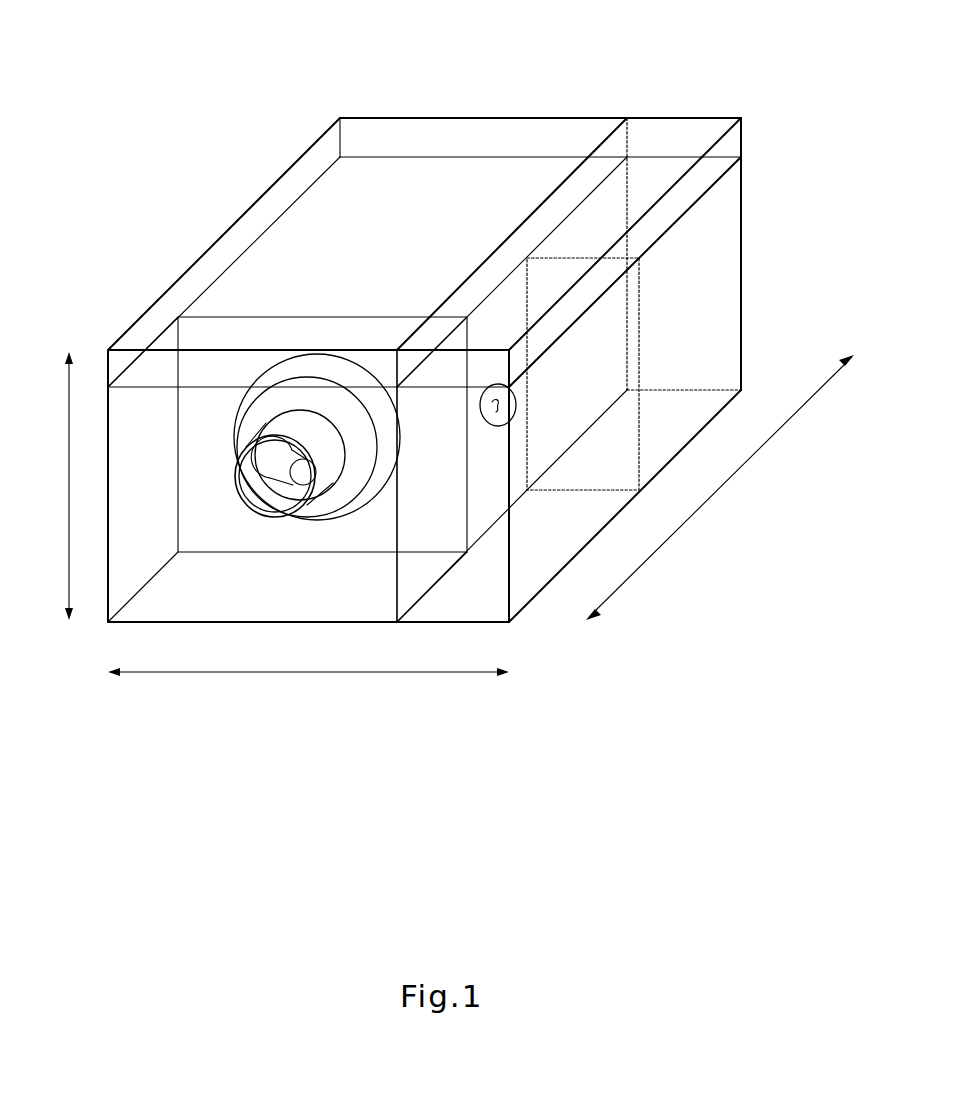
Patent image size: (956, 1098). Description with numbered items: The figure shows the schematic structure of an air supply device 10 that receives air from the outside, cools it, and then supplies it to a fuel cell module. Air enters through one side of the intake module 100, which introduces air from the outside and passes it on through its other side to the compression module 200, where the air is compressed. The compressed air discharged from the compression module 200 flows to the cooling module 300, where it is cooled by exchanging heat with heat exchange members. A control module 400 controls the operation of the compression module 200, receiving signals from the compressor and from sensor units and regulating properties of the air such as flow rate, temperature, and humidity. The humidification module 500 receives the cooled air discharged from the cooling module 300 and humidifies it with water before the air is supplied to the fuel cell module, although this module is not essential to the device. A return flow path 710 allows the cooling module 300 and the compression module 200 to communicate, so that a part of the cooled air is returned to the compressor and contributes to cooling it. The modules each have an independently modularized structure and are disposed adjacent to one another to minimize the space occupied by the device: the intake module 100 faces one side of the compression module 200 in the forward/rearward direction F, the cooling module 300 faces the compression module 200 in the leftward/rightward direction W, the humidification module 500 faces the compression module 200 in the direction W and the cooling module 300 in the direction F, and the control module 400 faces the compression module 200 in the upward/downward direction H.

The air supply device 10 is at (89, 33).
The intake module 100 is at (225, 623).
The compression module 200 is at (478, 182).
The cooling module 300 is at (592, 543).
The control module 400 is at (277, 200).
The humidification module 500 is at (741, 252).
The return flow path 710 is at (496, 416).
The upward/downward direction H is at (69, 488).
The leftward/rightward direction W is at (325, 673).
The forward/rearward direction F is at (720, 490).